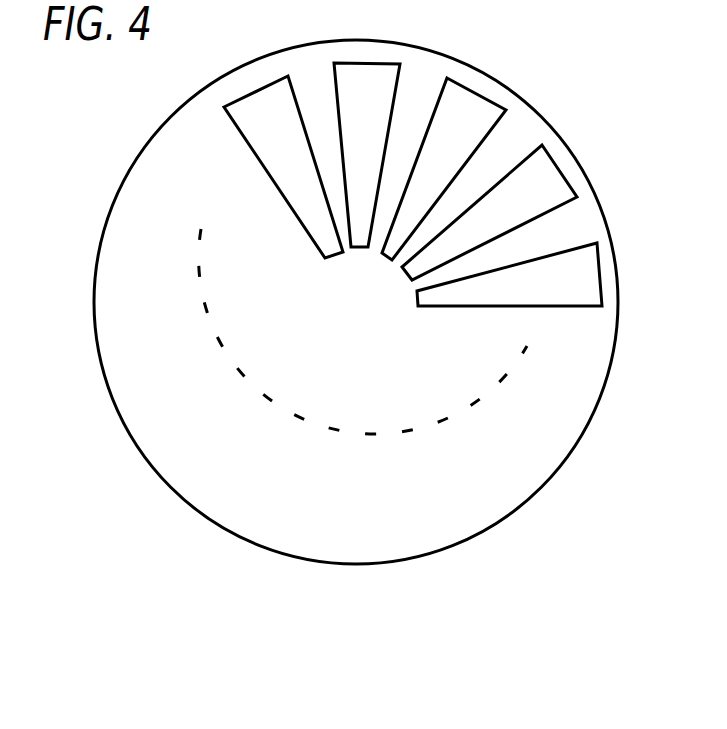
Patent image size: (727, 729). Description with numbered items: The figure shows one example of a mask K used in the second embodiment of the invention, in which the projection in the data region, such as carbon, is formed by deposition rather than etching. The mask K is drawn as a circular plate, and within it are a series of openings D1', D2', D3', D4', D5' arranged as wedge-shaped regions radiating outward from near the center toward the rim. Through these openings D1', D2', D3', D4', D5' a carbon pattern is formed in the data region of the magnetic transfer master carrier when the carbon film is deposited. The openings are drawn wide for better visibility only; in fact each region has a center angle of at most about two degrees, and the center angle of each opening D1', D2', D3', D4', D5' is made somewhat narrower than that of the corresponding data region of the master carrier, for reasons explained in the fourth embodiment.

The mask K is at (533, 452).
The opening D1' is at (283, 167).
The opening D2' is at (367, 155).
The opening D3' is at (444, 169).
The opening D4' is at (489, 212).
The opening D5' is at (509, 274).